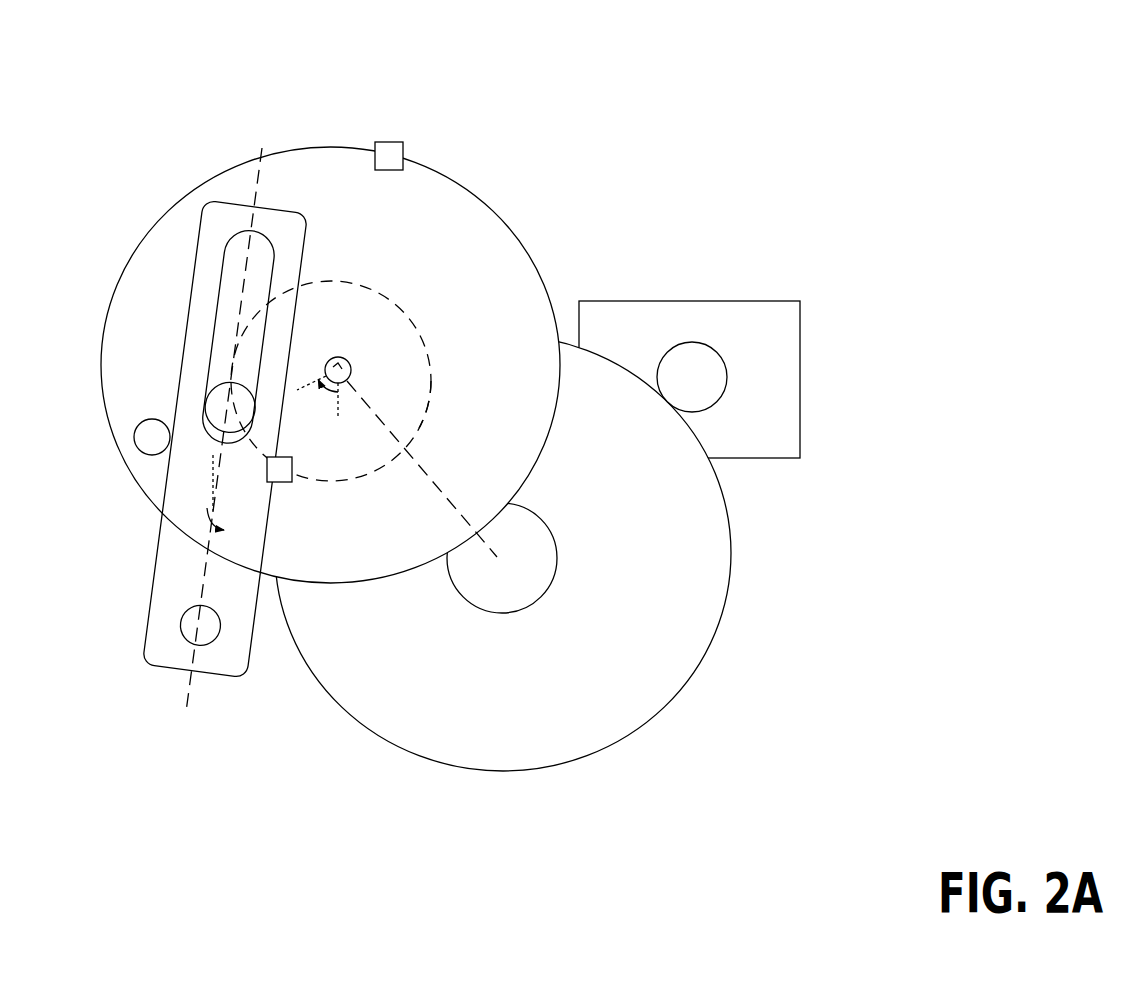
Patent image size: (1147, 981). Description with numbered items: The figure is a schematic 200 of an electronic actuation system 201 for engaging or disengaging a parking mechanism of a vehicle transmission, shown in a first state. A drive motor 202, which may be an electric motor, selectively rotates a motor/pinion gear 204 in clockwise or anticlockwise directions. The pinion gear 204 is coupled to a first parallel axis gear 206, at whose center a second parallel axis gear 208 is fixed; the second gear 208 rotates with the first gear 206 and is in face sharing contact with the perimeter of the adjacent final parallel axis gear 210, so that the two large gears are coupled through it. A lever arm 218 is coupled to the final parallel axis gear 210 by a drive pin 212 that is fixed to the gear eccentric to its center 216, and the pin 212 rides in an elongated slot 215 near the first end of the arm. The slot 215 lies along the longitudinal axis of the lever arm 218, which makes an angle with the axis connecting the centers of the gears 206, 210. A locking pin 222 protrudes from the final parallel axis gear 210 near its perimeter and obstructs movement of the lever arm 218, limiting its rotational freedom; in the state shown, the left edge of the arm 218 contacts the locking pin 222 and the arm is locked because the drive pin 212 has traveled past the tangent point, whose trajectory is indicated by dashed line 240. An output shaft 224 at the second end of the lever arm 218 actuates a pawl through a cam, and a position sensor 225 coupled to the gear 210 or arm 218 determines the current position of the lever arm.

The schematic 200 is at (1020, 68).
The electronic actuation system 201 is at (620, 157).
The drive motor 202 is at (767, 301).
The motor/pinion gear 204 is at (717, 402).
The first parallel axis gear 206 is at (726, 598).
The second parallel axis gear 208 is at (544, 593).
The final parallel axis gear 210 is at (452, 180).
The drive pin 212 is at (221, 424).
The slot 215 is at (272, 230).
The center 216 is at (348, 361).
The lever arm 218 is at (307, 283).
The locking pin 222 is at (143, 452).
The output shaft 224 is at (179, 622).
The position sensor 225 is at (387, 142).
The dashed line 240 is at (430, 380).